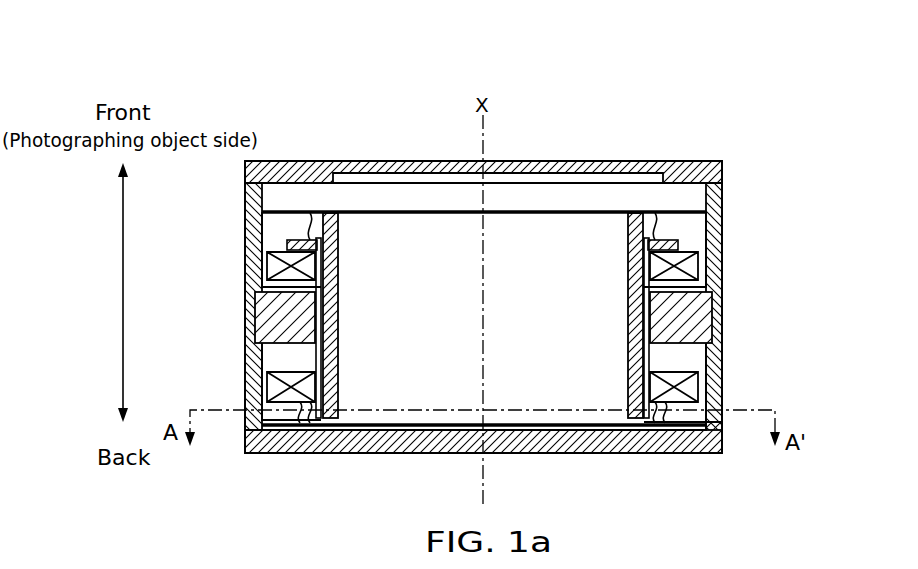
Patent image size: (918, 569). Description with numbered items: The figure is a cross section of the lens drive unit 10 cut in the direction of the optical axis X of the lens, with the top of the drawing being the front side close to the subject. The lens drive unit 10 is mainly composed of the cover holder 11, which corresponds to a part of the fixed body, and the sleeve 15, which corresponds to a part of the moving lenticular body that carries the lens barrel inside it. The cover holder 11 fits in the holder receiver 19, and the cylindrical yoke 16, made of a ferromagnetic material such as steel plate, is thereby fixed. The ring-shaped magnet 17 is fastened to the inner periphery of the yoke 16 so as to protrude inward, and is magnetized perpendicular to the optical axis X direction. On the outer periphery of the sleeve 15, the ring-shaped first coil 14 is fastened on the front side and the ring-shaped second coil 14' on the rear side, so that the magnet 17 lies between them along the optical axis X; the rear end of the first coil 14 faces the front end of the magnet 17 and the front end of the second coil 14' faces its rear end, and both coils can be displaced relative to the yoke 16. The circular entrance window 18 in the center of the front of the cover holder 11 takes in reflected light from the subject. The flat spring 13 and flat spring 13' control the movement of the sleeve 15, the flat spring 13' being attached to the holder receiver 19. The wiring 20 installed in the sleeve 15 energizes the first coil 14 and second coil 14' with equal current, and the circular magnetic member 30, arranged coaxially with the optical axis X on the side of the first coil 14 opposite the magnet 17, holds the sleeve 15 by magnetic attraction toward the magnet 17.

The lens drive unit 10 is at (716, 128).
The cover holder 11 is at (700, 161).
The flat spring 13 is at (484, 172).
The flat spring 13' is at (485, 459).
The first coil 14 is at (524, 266).
The second coil 14' is at (532, 387).
The sleeve 15 is at (628, 256).
The yoke 16 is at (723, 355).
The magnet 17 is at (520, 321).
The entrance window 18 is at (515, 164).
The holder receiver 19 is at (698, 445).
The wiring 20 is at (322, 300).
The magnetic member 30 is at (295, 240).